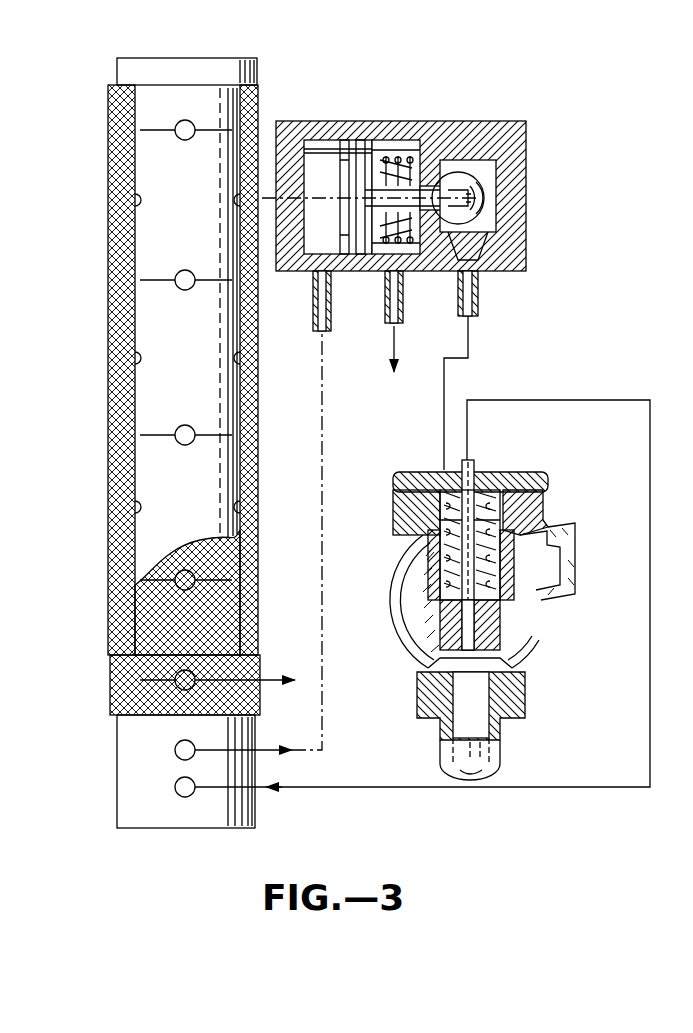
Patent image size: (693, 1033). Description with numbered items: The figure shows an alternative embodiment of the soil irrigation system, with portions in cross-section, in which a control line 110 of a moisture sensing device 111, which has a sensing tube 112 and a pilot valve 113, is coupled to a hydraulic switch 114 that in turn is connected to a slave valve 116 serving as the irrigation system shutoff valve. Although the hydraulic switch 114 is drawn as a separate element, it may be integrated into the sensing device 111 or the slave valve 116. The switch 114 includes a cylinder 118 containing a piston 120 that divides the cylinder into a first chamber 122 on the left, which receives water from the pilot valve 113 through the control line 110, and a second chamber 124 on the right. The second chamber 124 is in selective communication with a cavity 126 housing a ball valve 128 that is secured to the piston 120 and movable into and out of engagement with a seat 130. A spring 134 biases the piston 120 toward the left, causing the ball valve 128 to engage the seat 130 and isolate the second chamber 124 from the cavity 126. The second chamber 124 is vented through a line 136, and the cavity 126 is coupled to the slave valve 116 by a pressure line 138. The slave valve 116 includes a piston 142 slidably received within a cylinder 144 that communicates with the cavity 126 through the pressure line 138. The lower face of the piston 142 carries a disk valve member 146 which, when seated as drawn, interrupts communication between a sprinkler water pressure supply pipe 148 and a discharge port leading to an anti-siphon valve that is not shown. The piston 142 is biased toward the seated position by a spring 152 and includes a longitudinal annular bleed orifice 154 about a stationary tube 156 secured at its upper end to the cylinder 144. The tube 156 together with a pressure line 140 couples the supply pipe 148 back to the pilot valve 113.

The control line 110 is at (326, 600).
The moisture sensing device 111 is at (106, 412).
The sensing tube 112 is at (160, 526).
The pilot valve 113 is at (146, 774).
The hydraulic switch 114 is at (425, 86).
The slave valve 116 is at (553, 672).
The cylinder 118 is at (320, 132).
The piston 120 is at (360, 145).
The first chamber 122 is at (314, 236).
The second chamber 124 is at (402, 150).
The cavity 126 is at (512, 150).
The ball valve 128 is at (516, 160).
The seat 130 is at (452, 220).
The spring 134 is at (470, 160).
The line 136 is at (386, 290).
The pressure line 138 is at (469, 342).
The pressure line 140 is at (650, 752).
The piston 142 is at (505, 620).
The cylinder 144 is at (549, 522).
The disk valve member 146 is at (440, 628).
The sprinkler water pressure supply pipe 148 is at (500, 750).
The spring 152 is at (506, 558).
The annular bleed orifice 154 is at (446, 568).
The stationary tube 156 is at (476, 468).